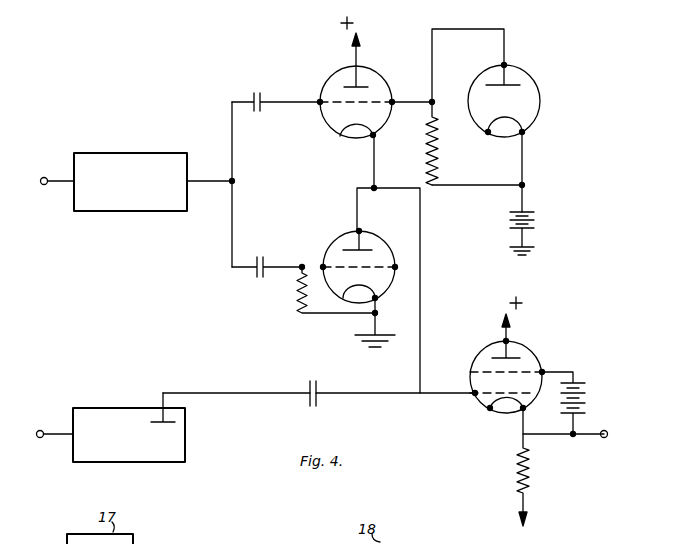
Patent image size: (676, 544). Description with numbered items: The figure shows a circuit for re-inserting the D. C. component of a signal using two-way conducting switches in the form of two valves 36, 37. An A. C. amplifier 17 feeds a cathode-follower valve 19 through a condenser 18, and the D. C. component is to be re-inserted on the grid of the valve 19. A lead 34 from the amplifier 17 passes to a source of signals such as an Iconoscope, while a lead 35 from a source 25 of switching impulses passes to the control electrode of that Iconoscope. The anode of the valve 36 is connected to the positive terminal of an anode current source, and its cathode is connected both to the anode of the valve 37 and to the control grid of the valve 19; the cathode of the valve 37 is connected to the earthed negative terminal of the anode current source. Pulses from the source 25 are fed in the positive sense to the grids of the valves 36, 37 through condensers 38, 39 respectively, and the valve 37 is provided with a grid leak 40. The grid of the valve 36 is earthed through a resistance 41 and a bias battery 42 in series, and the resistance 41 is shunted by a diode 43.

The A. C. amplifier 17 is at (130, 410).
The condenser 18 is at (319, 400).
The cathode-follower valve 19 is at (538, 357).
The source of switching impulses 25 is at (132, 147).
The lead 34 is at (52, 427).
The lead 35 is at (55, 175).
The valve 36 is at (332, 74).
The valve 37 is at (330, 245).
The condenser 38 is at (254, 99).
The condenser 39 is at (253, 280).
The grid leak 40 is at (297, 292).
The resistance 41 is at (438, 152).
The bias battery 42 is at (512, 215).
The diode 43 is at (528, 76).